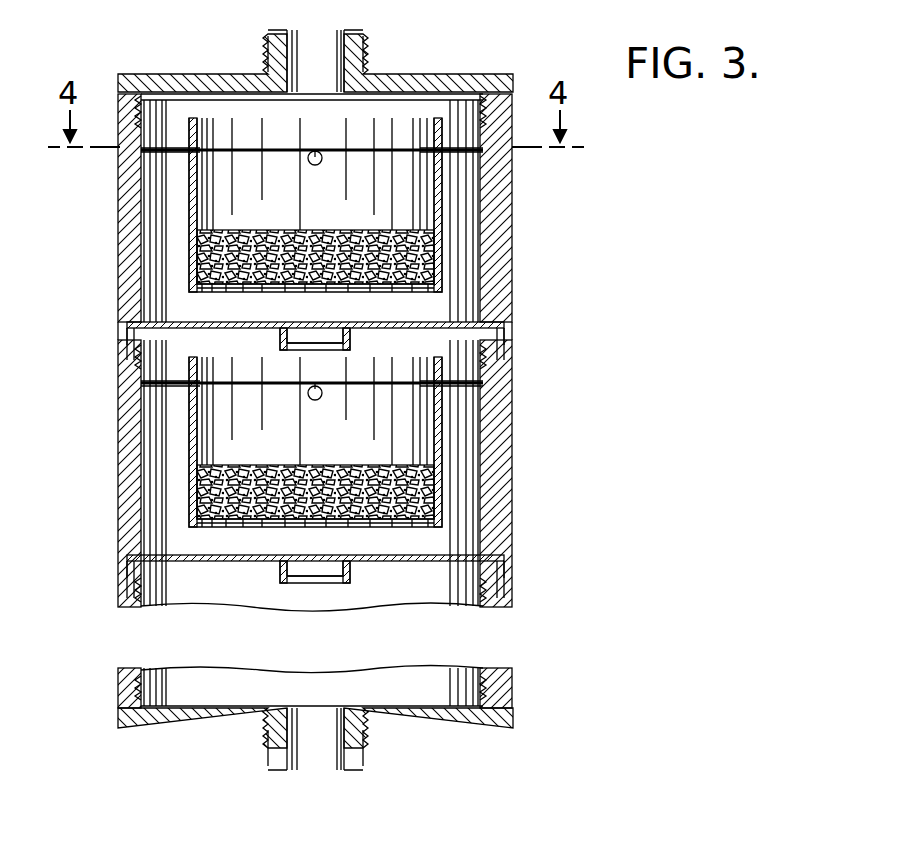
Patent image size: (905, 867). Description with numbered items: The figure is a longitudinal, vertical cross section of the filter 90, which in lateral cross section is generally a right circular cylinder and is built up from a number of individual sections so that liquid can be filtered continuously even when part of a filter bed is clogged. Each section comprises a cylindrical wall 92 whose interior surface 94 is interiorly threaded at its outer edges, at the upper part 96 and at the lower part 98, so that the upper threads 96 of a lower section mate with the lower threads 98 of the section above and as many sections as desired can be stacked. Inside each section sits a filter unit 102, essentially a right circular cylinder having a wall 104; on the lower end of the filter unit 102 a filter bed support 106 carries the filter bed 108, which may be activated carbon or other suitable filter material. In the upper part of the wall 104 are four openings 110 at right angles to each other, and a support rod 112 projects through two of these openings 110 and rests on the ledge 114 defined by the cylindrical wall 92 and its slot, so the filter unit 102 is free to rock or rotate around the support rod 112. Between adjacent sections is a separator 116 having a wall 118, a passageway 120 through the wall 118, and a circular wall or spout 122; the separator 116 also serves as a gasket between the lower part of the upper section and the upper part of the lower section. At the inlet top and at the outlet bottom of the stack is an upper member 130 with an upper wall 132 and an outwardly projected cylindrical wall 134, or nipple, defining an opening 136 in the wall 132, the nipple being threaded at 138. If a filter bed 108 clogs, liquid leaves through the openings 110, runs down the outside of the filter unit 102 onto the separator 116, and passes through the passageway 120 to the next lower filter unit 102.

The filter 90 is at (402, 72).
The cylindrical wall 92 is at (126, 214).
The interior surface 94 is at (478, 316).
The upper part 96 is at (496, 128).
The lower part 98 is at (127, 346).
The filter unit 102 is at (189, 243).
The wall 104 is at (200, 226).
The filter bed support 106 is at (236, 290).
The filter bed 108 is at (362, 236).
The openings 110 is at (190, 162).
The support rod 112 is at (420, 162).
The ledge 114 is at (140, 167).
The separator 116 is at (208, 331).
The wall 118 is at (496, 324).
The passageway 120 is at (318, 334).
The spout 122 is at (360, 338).
The upper member 130 is at (152, 75).
The upper wall 132 is at (215, 72).
The cylindrical wall 134 is at (283, 42).
The opening 136 is at (323, 56).
The threads 138 is at (362, 50).